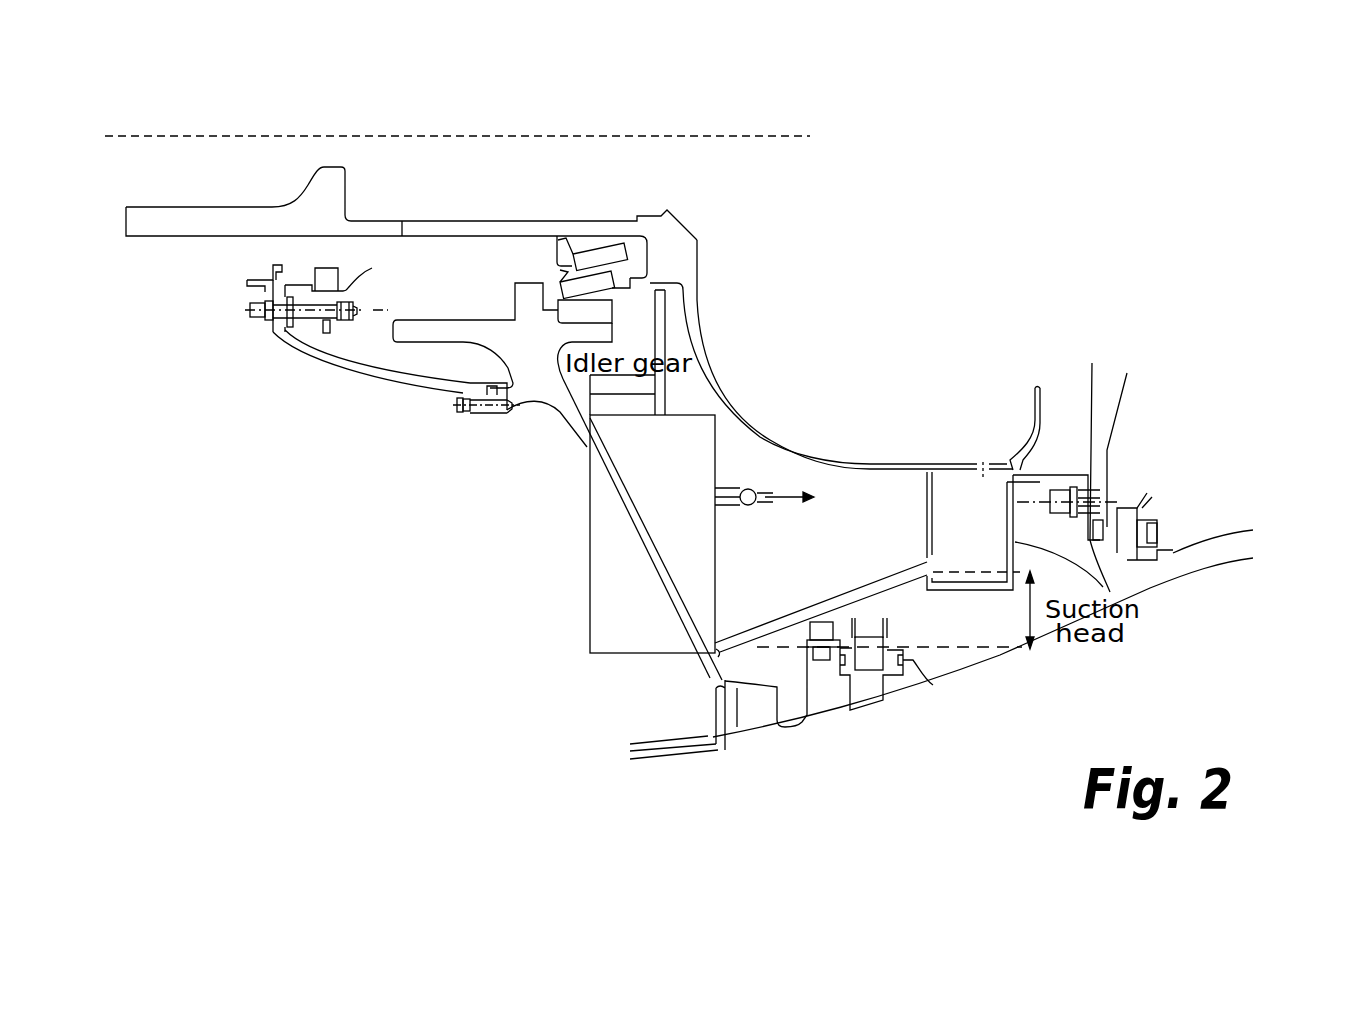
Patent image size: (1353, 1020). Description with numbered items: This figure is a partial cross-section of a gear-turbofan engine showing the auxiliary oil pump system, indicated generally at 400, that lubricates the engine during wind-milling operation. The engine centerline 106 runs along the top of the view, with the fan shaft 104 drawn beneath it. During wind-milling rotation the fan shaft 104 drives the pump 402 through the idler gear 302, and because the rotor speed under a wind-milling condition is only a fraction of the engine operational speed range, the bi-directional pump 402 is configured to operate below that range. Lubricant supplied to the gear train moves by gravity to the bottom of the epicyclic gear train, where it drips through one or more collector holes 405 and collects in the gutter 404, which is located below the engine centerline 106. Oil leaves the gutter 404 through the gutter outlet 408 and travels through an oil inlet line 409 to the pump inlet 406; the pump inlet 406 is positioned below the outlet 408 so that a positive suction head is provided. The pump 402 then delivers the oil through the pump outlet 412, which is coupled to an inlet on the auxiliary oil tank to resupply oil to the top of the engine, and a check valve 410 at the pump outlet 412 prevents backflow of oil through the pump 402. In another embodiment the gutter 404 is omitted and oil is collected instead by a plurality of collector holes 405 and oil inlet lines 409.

The fan shaft 104 is at (208, 237).
The engine centerline 106 is at (717, 136).
The idler gear 302 is at (684, 318).
The auxiliary oil pump system 400 is at (1161, 108).
The pump 402 is at (587, 587).
The gutter 404 is at (1110, 592).
The collector holes 405 is at (983, 452).
The pump inlet 406 is at (718, 656).
The gutter outlet 408 is at (930, 570).
The oil inlet line 409 is at (890, 593).
The check valve 410 is at (752, 486).
The pump outlet 412 is at (717, 512).